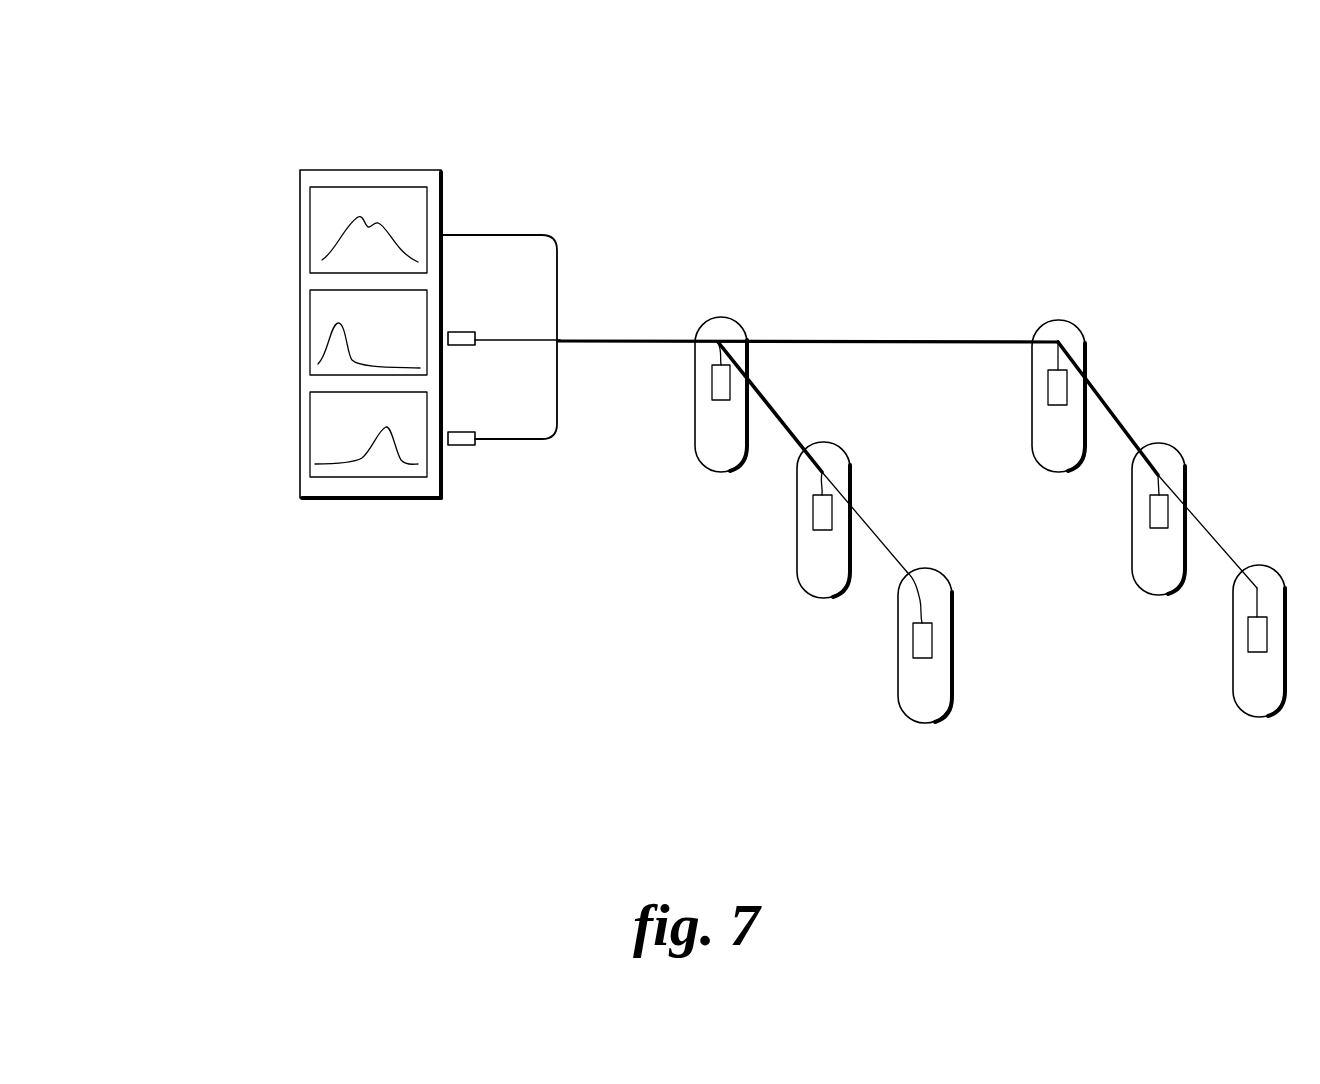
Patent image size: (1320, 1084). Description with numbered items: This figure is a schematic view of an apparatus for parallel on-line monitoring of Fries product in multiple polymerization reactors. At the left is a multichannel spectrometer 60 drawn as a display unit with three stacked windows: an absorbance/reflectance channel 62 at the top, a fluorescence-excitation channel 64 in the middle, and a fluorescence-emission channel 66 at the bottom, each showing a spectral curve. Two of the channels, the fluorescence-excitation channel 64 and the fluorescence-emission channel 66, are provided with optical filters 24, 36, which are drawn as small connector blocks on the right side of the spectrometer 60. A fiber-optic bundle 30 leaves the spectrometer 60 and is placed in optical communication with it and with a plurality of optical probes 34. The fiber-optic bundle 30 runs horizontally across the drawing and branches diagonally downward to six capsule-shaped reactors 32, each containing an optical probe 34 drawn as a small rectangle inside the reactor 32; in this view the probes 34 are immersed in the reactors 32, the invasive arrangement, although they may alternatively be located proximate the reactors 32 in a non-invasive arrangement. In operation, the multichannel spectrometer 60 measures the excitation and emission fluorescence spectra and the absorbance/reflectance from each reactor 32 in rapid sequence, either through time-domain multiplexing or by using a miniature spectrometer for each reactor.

The optical filter 24 is at (462, 332).
The fiber-optic bundle 30 is at (586, 341).
The reactor 32 is at (702, 462).
The optical probe 34 is at (722, 400).
The optical filter 36 is at (462, 445).
The multichannel spectrometer 60 is at (309, 349).
The absorbance/reflectance channel 62 is at (330, 170).
The fluorescence-excitation channel 64 is at (300, 341).
The fluorescence-emission channel 66 is at (300, 458).